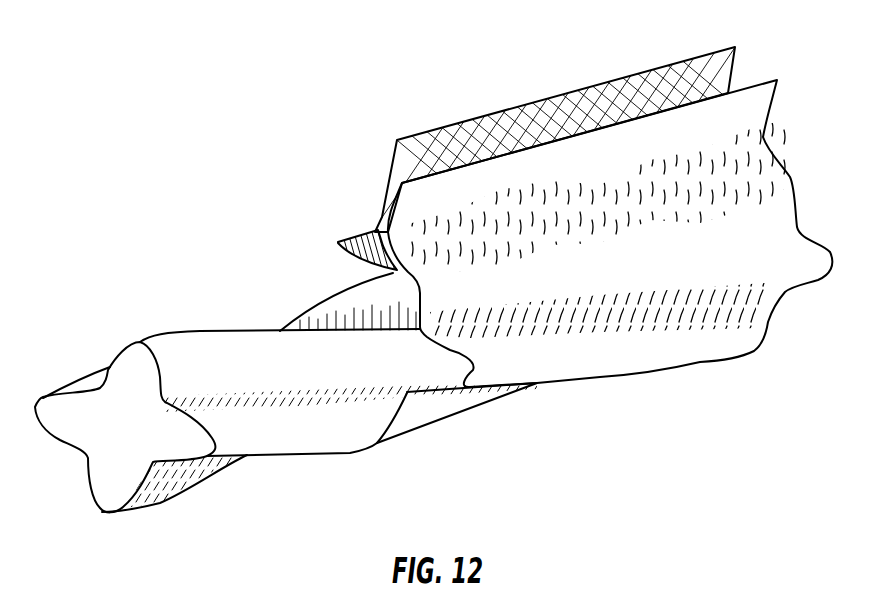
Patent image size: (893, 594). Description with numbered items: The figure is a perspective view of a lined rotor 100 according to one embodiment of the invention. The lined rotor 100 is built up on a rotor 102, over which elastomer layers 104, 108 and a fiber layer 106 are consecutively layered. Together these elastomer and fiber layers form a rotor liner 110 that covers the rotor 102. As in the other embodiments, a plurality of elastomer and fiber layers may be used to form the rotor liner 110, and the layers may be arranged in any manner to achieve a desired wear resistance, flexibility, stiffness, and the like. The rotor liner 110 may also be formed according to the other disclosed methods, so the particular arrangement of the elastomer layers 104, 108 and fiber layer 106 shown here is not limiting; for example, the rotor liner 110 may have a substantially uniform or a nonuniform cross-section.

The lined rotor 100 is at (252, 155).
The rotor 102 is at (108, 498).
The elastomer layer 104 is at (610, 140).
The fiber layer 106 is at (467, 120).
The elastomer layer 108 is at (357, 240).
The rotor liner 110 is at (642, 362).